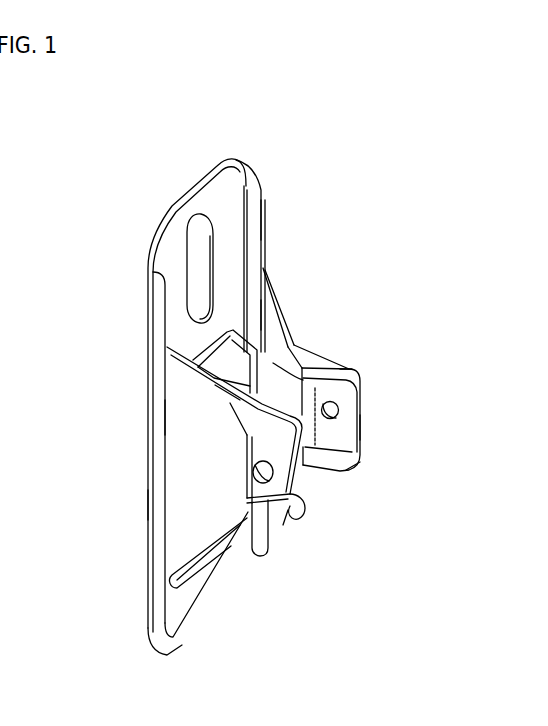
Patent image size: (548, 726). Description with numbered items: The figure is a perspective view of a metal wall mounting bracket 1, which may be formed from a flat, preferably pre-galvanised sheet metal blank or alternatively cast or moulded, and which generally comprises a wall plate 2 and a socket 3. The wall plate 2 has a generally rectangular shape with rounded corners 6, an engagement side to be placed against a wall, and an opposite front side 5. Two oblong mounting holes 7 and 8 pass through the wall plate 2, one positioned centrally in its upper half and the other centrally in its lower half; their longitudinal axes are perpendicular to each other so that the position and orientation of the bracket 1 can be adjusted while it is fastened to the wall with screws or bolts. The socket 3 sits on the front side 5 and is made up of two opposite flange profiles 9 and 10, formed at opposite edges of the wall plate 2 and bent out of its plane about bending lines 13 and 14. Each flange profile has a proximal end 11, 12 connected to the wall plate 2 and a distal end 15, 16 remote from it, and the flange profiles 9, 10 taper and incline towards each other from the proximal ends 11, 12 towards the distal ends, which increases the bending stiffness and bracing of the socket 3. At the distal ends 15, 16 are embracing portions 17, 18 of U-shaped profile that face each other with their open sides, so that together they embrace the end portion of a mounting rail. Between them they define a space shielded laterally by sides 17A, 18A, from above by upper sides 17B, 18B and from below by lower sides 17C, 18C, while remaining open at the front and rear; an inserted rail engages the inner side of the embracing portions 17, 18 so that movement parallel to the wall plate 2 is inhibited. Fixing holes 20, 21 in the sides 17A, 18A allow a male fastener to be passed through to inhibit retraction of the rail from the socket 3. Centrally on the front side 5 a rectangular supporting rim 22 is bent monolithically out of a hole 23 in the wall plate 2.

The metal wall mounting bracket 1 is at (320, 96).
The wall plate 2 is at (226, 196).
The socket 3 is at (324, 500).
The front side 5 is at (265, 275).
The rounded corners 6 is at (231, 158).
The oblong mounting hole 7 is at (197, 264).
The oblong mounting hole 8 is at (200, 568).
The flange profile 9 is at (315, 365).
The flange profile 10 is at (218, 458).
The proximal end 11 is at (264, 316).
The proximal end 12 is at (158, 417).
The bending line 13 is at (263, 220).
The bending line 14 is at (145, 505).
The distal end 15 is at (368, 412).
The distal end 16 is at (287, 498).
The embracing portion 17 is at (348, 442).
The side 17A is at (362, 427).
The upper side 17B is at (352, 367).
The lower side 17C is at (360, 463).
The embracing portion 18 is at (289, 530).
The side 18A is at (263, 484).
The upper side 18B is at (262, 412).
The lower side 18C is at (305, 501).
The fixing hole 20 is at (336, 406).
The fixing hole 21 is at (248, 515).
The supporting rim 22 is at (167, 349).
The hole 23 is at (229, 380).